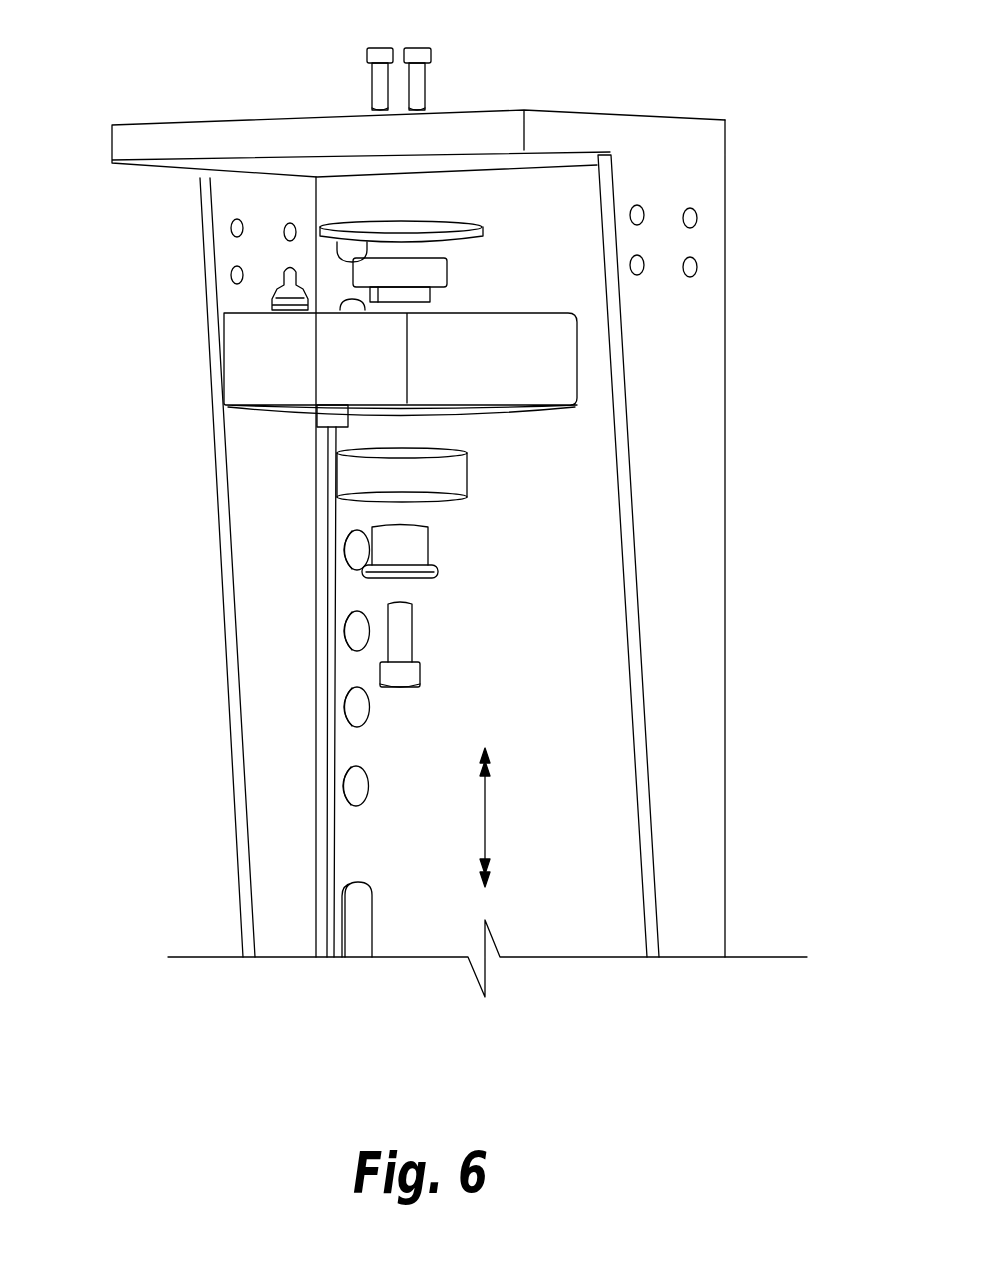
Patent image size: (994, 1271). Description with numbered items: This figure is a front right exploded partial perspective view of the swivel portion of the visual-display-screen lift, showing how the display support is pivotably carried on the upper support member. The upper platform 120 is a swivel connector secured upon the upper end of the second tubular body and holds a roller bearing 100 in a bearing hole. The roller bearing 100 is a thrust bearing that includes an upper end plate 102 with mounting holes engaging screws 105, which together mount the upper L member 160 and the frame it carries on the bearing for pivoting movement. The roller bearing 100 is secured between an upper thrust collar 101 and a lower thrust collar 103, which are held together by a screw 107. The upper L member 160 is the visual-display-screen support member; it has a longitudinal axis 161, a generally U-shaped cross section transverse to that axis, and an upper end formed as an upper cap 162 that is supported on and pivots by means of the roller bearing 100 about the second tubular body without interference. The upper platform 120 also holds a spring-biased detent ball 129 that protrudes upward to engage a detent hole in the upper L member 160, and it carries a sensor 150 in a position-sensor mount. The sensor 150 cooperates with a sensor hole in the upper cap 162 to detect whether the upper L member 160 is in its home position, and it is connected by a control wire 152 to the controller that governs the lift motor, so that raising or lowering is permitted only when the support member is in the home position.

The roller bearing 100 is at (453, 473).
The upper thrust collar 101 is at (443, 277).
The upper end plate 102 is at (470, 232).
The lower thrust collar 103 is at (427, 570).
The screws 105 is at (378, 85).
The screw 107 is at (400, 635).
The upper platform 120 is at (250, 372).
The detent ball 129 is at (278, 290).
The sensor 150 is at (333, 417).
The control wire 152 is at (335, 853).
The upper L member 160 is at (260, 545).
The longitudinal axis 161 is at (510, 817).
The upper cap 162 is at (207, 137).